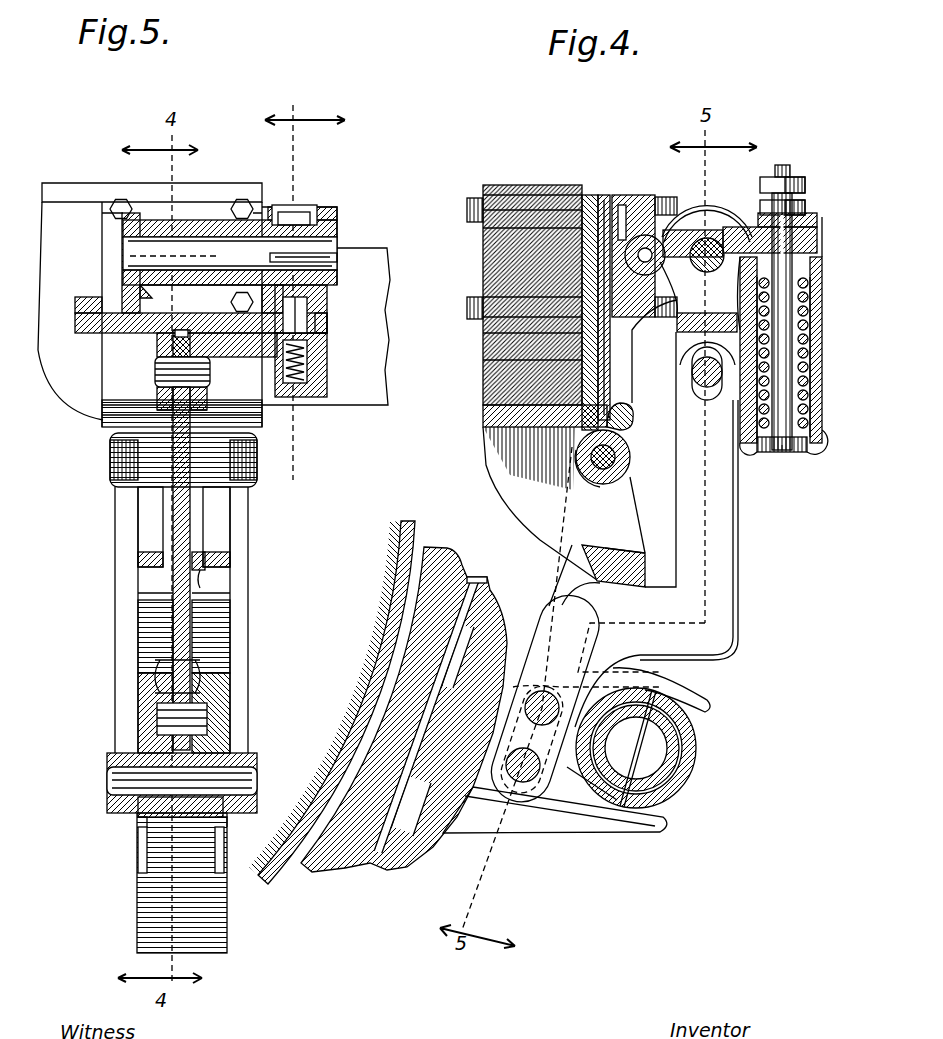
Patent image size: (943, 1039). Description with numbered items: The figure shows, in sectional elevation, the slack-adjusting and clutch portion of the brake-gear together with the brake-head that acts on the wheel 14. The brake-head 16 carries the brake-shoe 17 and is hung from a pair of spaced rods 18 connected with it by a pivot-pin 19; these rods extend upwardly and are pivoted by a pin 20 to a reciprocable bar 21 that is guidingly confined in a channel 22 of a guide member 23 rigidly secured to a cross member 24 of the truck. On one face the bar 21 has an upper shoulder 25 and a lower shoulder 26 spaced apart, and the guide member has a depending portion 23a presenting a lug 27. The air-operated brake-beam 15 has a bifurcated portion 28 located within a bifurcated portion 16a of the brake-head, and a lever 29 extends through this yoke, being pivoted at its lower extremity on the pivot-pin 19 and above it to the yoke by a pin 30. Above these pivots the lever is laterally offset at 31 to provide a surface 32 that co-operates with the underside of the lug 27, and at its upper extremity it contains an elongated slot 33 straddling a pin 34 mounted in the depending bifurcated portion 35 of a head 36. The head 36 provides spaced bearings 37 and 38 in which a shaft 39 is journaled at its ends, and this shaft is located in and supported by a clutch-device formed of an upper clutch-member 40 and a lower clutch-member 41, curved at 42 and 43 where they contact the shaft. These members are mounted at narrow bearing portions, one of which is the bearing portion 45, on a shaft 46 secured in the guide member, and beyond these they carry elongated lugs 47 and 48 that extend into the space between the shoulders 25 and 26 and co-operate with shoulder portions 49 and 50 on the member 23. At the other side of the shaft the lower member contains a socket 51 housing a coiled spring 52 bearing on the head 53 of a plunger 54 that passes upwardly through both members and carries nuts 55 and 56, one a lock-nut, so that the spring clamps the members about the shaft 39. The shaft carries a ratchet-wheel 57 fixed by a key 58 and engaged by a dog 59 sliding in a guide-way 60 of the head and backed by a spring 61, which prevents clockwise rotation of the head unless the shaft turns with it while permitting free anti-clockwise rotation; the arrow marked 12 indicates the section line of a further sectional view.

In FIG. 5, the direction arrow 12 is at (305, 281).
In FIG. 4, the wheel 14 is at (368, 717).
In FIG. 4, the brake-beam 15 is at (660, 790).
In FIG. 5, the brake-head 16 is at (215, 650).
In FIG. 4, the brake-head 16 is at (447, 840).
In FIG. 4, the bifurcated portion 16a is at (577, 798).
In FIG. 5, the brake-shoe 17 is at (158, 890).
In FIG. 4, the brake-shoe 17 is at (372, 797).
In FIG. 5, the rods 18 is at (122, 617).
In FIG. 4, the rods 18 is at (558, 575).
In FIG. 5, the pivot-pin 19 is at (128, 783).
In FIG. 4, the pivot-pin 19 is at (500, 792).
In FIG. 5, the pin 20 is at (112, 462).
In FIG. 4, the pin 20 is at (628, 450).
In FIG. 5, the reciprocable bar 21 is at (120, 420).
In FIG. 4, the reciprocable bar 21 is at (595, 195).
In FIG. 4, the channel 22 is at (590, 360).
In FIG. 4, the guide member 23 is at (585, 383).
In FIG. 5, the depending portion 23a is at (210, 517).
In FIG. 4, the depending portion 23a is at (530, 507).
In FIG. 5, the cross member 24 is at (55, 352).
In FIG. 4, the cross member 24 is at (500, 247).
In FIG. 4, the upper shoulder 25 is at (597, 190).
In FIG. 4, the lower shoulder 26 is at (480, 300).
In FIG. 5, the lug 27 is at (205, 562).
In FIG. 4, the lug 27 is at (620, 553).
In FIG. 5, the bifurcated portion 28 is at (162, 673).
In FIG. 4, the bifurcated portion 28 is at (600, 710).
In FIG. 5, the lever 29 is at (178, 572).
In FIG. 4, the lever 29 is at (720, 634).
In FIG. 5, the pin 30 is at (160, 718).
In FIG. 4, the pin 30 is at (543, 690).
In FIG. 4, the lateral offset 31 is at (673, 653).
In FIG. 4, the surface 32 is at (615, 590).
In FIG. 5, the elongated slot 33 is at (173, 355).
In FIG. 4, the elongated slot 33 is at (692, 372).
In FIG. 5, the pin 34 is at (160, 378).
In FIG. 4, the pin 34 is at (692, 392).
In FIG. 5, the bifurcated portion 35 is at (215, 410).
In FIG. 4, the bifurcated portion 35 is at (676, 440).
In FIG. 5, the head 36 is at (260, 333).
In FIG. 4, the head 36 is at (766, 200).
In FIG. 5, the bearing 37 is at (122, 280).
In FIG. 5, the bearing 38 is at (322, 224).
In FIG. 5, the shaft 39 is at (128, 258).
In FIG. 4, the shaft 39 is at (705, 205).
In FIG. 5, the upper clutch-member 40 is at (165, 232).
In FIG. 4, the upper clutch-member 40 is at (752, 235).
In FIG. 5, the lower clutch-member 41 is at (160, 290).
In FIG. 4, the lower clutch-member 41 is at (822, 452).
In FIG. 5, the curved surface 42 is at (207, 232).
In FIG. 4, the curved surface 42 is at (715, 238).
In FIG. 5, the curved surface 43 is at (223, 305).
In FIG. 4, the curved surface 43 is at (707, 312).
In FIG. 4, the bearing portion 45 is at (646, 233).
In FIG. 4, the shaft 46 is at (677, 230).
In FIG. 4, the elongated lug 47 is at (570, 248).
In FIG. 4, the elongated lug 48 is at (603, 267).
In FIG. 4, the shoulder portion 49 is at (622, 200).
In FIG. 4, the shoulder portion 50 is at (585, 333).
In FIG. 4, the socket 51 is at (757, 440).
In FIG. 4, the coiled spring 52 is at (760, 395).
In FIG. 4, the head 53 is at (782, 452).
In FIG. 4, the plunger 54 is at (780, 176).
In FIG. 4, the nut 55 is at (806, 208).
In FIG. 4, the nut 56 is at (798, 182).
In FIG. 5, the ratchet-wheel 57 is at (298, 215).
In FIG. 5, the key 58 is at (305, 256).
In FIG. 5, the dog 59 is at (327, 305).
In FIG. 5, the guide-way 60 is at (327, 320).
In FIG. 5, the spring 61 is at (318, 372).